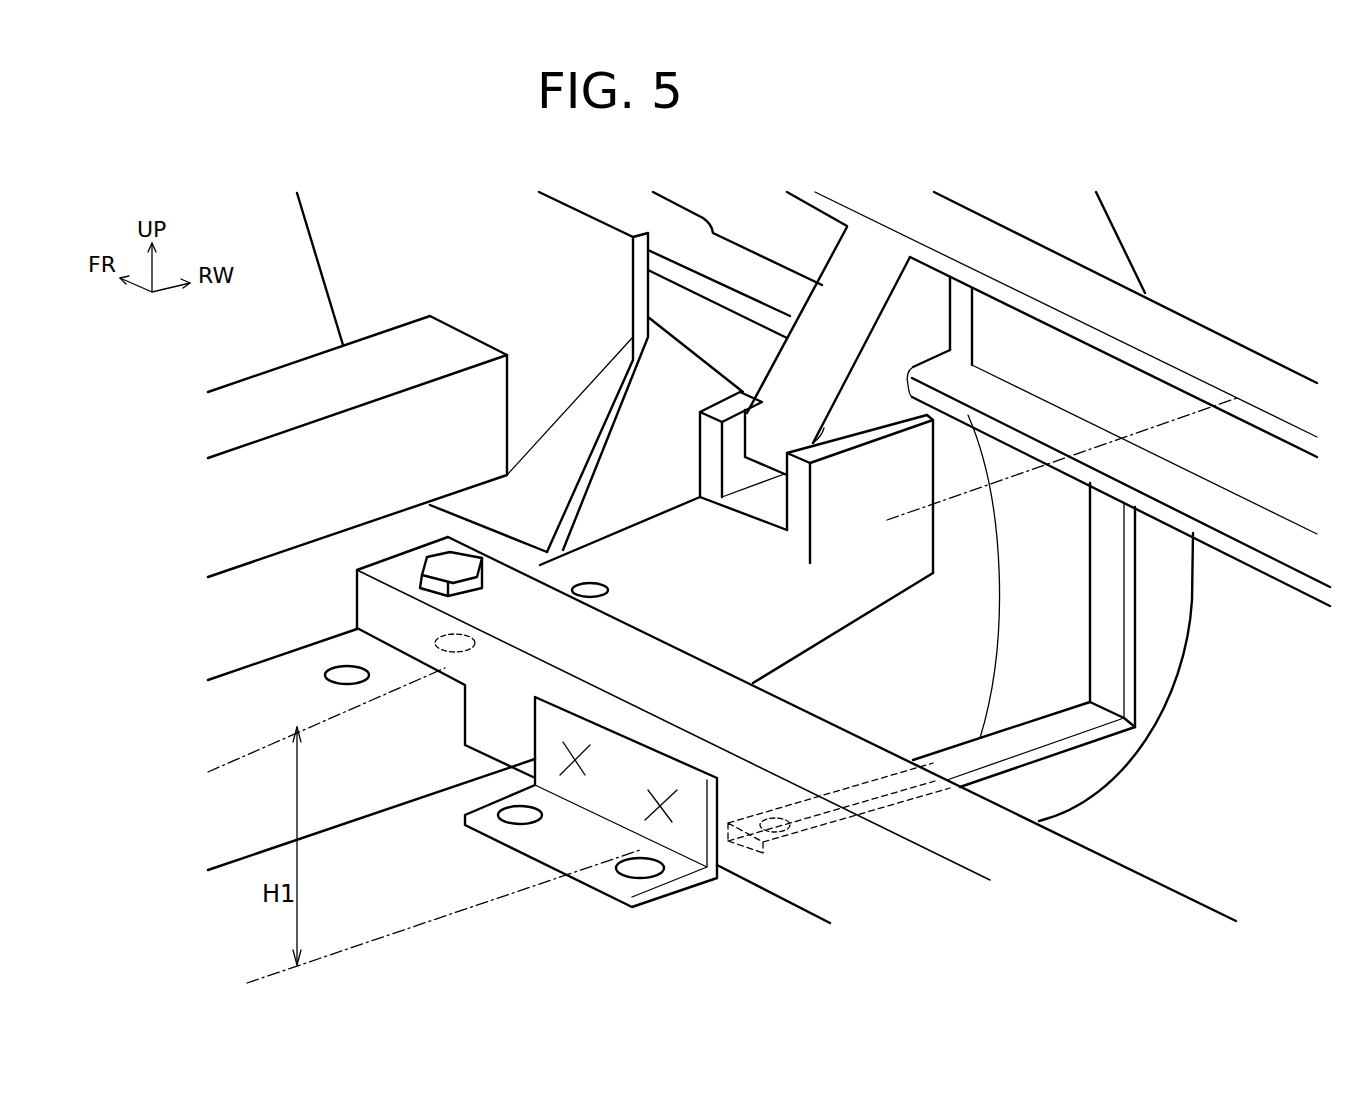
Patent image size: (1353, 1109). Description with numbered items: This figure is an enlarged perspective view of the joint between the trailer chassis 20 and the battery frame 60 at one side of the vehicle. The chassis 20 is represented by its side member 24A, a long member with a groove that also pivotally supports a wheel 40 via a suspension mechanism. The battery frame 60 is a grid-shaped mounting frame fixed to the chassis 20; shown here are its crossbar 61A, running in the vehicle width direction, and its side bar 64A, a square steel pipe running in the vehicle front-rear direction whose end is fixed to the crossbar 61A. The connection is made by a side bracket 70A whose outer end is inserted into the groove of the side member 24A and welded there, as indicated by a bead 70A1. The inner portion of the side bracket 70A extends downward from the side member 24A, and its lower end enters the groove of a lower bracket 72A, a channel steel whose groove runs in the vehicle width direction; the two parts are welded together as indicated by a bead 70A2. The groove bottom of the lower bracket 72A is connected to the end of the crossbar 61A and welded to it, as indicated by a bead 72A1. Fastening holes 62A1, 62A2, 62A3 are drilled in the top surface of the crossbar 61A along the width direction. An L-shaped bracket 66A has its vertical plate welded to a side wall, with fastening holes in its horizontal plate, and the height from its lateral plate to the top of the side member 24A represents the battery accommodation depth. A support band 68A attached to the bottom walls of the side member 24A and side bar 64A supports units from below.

The chassis 20 is at (1272, 330).
The side member 24A is at (1190, 343).
The wheel 40 is at (1168, 604).
The battery frame 60 is at (823, 700).
The crossbar 61A is at (347, 795).
The fastening hole 62A1 is at (347, 667).
The fastening hole 62A2 is at (435, 648).
The fastening hole 62A3 is at (573, 590).
The side bar 64A is at (798, 882).
The L-shaped bracket 66A is at (670, 903).
The support band 68A is at (1018, 741).
The side bracket 70A is at (837, 273).
The bead 70A1 is at (995, 325).
The bead 70A2 is at (867, 423).
The lower bracket 72A is at (723, 413).
The bead 72A1 is at (723, 522).